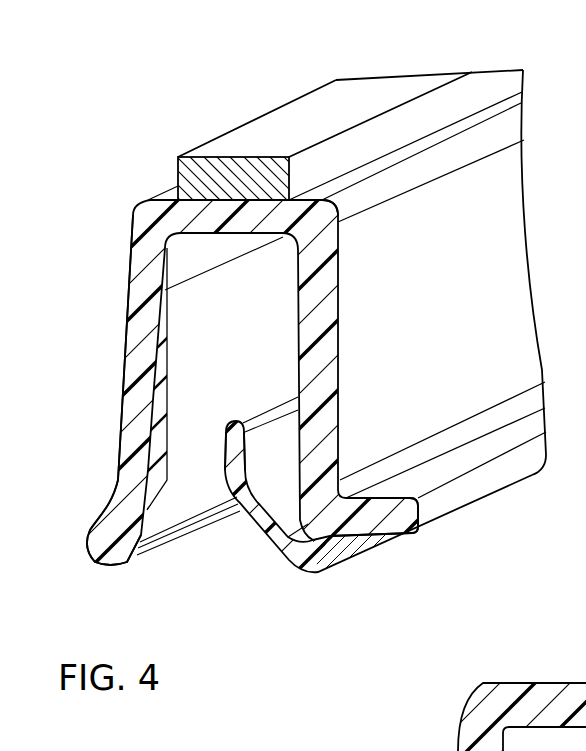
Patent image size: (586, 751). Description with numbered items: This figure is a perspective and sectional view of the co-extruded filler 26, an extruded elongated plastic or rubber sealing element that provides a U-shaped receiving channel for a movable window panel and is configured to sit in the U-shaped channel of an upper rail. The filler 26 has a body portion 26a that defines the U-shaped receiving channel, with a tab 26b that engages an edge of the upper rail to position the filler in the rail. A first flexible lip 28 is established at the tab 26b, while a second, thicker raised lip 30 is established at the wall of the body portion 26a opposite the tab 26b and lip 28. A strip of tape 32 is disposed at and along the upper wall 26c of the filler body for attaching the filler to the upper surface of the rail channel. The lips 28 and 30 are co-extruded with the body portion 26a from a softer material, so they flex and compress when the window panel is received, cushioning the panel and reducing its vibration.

The filler 26 is at (95, 180).
The body portion 26a is at (97, 315).
The tab 26b is at (420, 522).
The upper wall 26c is at (335, 238).
The first lip 28 is at (305, 577).
The second lip 30 is at (193, 440).
The strip of tape 32 is at (358, 97).